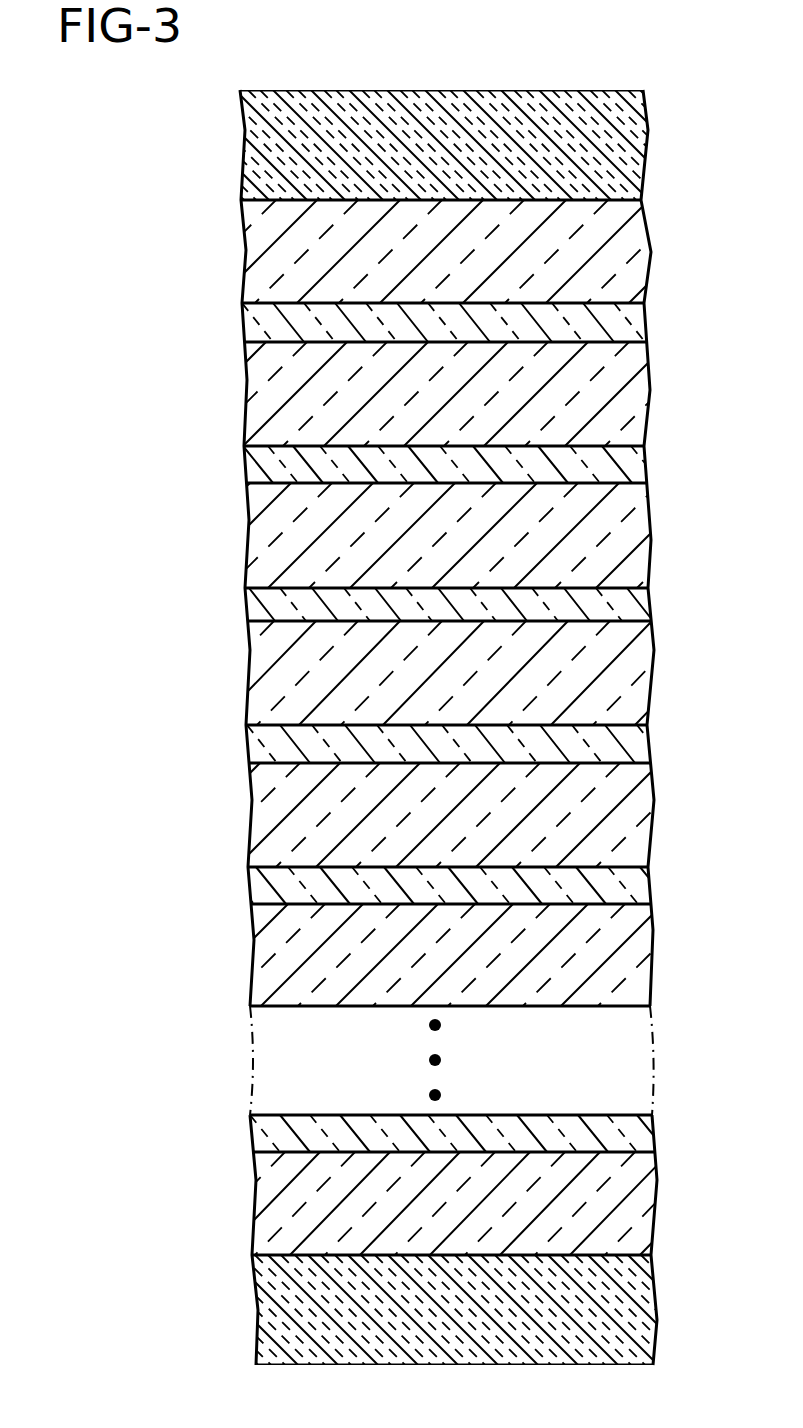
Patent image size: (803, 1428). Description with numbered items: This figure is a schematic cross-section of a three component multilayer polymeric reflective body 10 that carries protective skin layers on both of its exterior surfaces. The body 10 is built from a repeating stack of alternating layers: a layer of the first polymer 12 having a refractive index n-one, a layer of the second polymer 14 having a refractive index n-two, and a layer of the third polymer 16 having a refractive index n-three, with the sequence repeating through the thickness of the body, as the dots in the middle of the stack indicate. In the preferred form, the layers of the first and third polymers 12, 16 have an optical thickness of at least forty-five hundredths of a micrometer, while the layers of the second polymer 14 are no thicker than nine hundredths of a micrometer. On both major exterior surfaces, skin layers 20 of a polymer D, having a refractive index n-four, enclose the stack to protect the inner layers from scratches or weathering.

The multilayer reflective polymer body 10 is at (83, 147).
The first polymer (A) layer 12 is at (240, 538).
The second polymer (B) layer 14 is at (248, 598).
The third polymer (C) layer 16 is at (255, 663).
The skin layer 20 is at (248, 137).
The polymer D is at (630, 152).